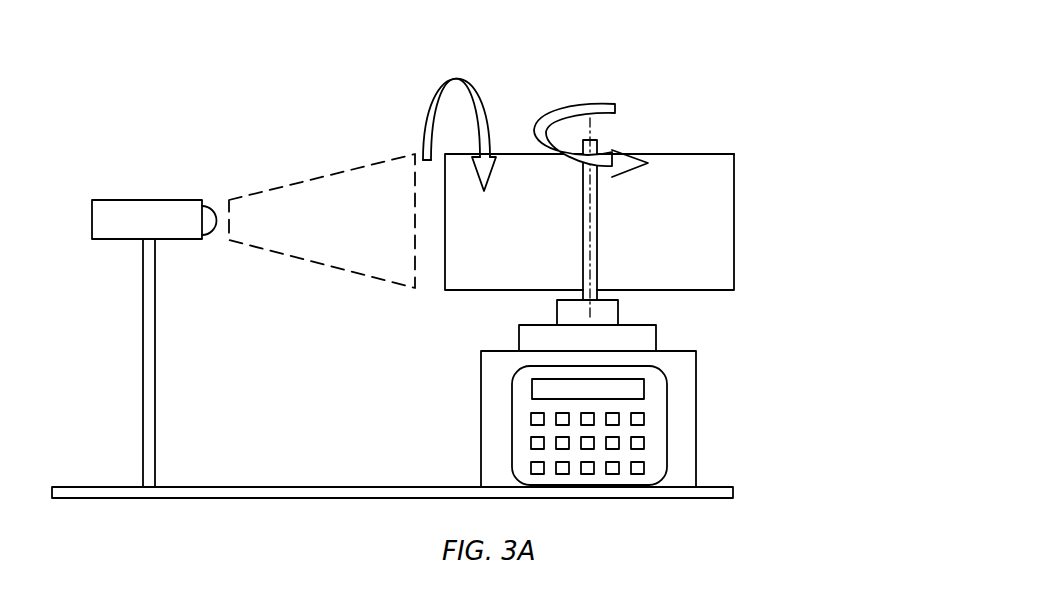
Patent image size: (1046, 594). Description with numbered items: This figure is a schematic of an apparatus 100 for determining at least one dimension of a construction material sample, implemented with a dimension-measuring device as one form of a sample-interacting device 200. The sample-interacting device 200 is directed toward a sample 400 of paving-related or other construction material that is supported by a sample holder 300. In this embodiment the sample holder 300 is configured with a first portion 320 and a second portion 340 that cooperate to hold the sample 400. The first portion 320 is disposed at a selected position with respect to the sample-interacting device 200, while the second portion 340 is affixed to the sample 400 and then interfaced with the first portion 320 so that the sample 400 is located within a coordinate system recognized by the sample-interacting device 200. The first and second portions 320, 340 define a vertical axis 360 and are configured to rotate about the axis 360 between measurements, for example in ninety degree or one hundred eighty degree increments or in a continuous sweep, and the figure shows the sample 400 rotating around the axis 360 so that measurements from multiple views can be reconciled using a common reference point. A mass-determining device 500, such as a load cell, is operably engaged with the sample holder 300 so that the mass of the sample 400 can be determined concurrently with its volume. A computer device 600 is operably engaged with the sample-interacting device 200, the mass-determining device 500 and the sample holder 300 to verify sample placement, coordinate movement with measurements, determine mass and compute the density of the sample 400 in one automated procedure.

The apparatus 100 is at (795, 108).
The sample-interacting device 200 is at (134, 215).
The sample holder 300 is at (504, 304).
The sample 400 is at (702, 265).
The second portion 340 is at (598, 213).
The vertical axis 360 is at (595, 130).
The first portion 320 is at (612, 315).
The mass-determining device 500 is at (648, 336).
The computer device 600 is at (685, 430).